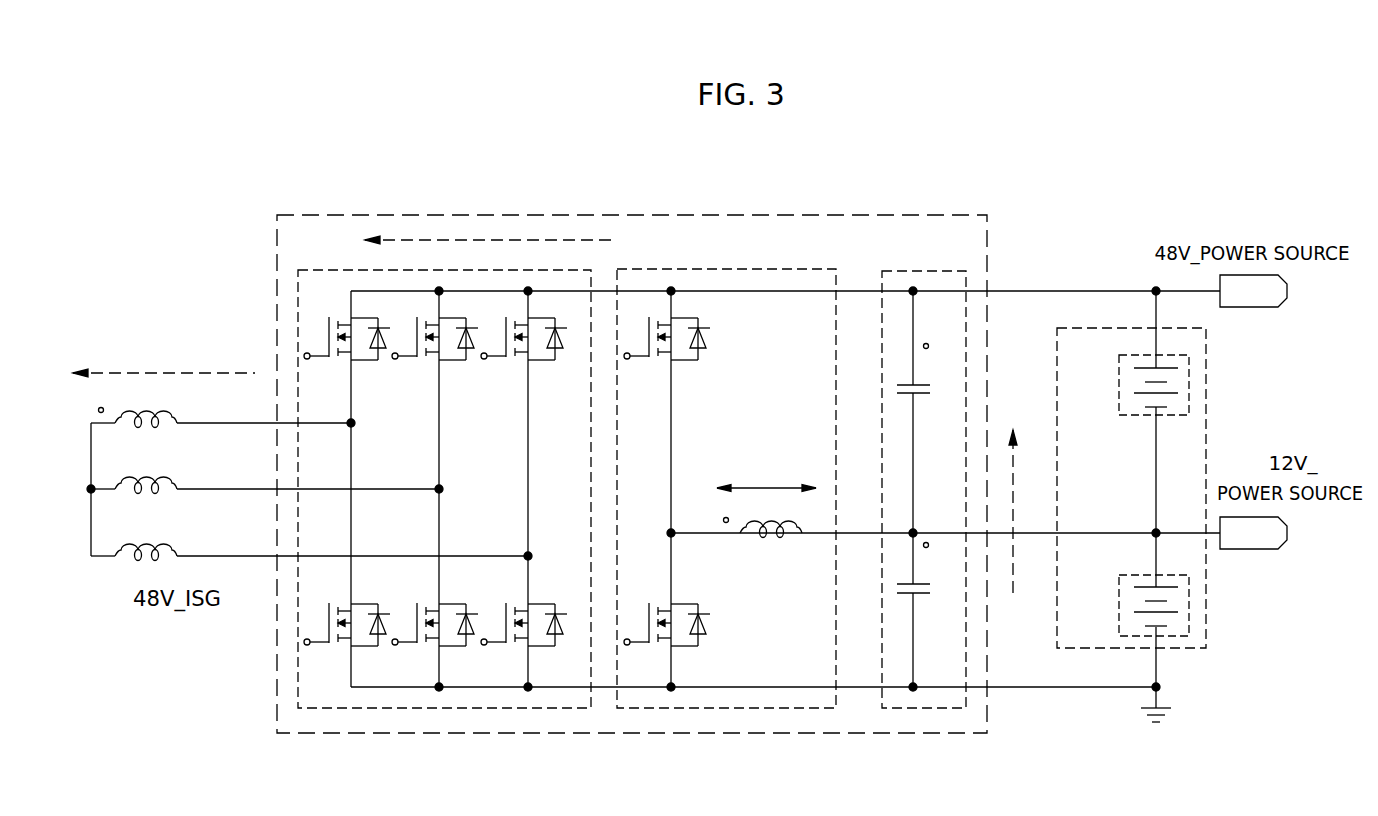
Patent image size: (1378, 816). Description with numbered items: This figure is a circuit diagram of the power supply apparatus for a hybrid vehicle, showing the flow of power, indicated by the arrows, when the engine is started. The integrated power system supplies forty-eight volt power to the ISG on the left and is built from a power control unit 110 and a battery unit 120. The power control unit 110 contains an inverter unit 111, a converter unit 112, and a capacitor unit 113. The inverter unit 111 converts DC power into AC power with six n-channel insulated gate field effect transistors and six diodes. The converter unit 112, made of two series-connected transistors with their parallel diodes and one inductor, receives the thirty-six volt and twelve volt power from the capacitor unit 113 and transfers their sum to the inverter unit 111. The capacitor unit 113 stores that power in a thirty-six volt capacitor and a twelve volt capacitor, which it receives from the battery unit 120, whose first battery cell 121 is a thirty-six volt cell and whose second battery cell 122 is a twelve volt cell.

The power control unit 110 is at (590, 215).
The inverter unit 111 is at (443, 710).
The converter unit 112 is at (719, 710).
The capacitor unit 113 is at (915, 710).
The battery unit 120 is at (1107, 328).
The first battery cell 121 is at (1189, 385).
The second battery cell 122 is at (1189, 630).